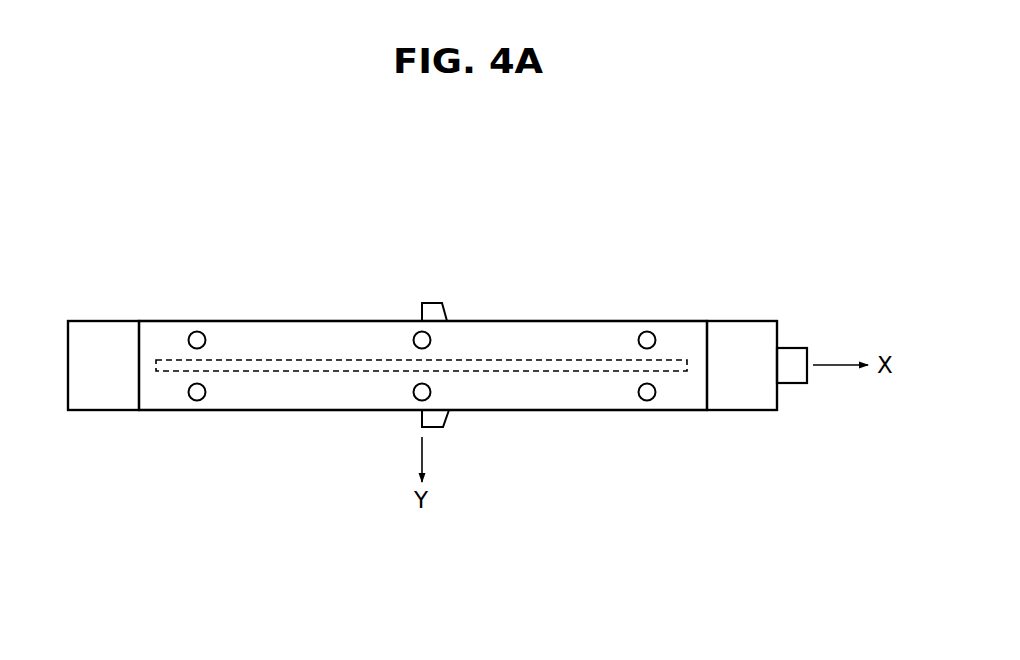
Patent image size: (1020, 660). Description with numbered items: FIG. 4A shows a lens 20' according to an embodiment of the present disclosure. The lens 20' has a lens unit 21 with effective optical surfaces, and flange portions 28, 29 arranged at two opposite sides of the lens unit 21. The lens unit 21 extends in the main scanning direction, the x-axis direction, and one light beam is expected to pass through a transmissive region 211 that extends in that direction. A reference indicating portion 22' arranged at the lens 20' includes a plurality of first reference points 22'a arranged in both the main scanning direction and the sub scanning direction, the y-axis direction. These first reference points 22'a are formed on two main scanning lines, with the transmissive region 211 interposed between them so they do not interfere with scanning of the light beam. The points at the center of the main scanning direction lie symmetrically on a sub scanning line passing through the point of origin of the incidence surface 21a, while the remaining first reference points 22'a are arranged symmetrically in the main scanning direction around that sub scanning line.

The lens 20' is at (430, 318).
The lens unit 21 is at (584, 484).
The incidence surface 21a is at (560, 411).
The transmissive region 211 is at (270, 373).
The reference indicating portion 22' is at (381, 309).
The first reference points 22'a is at (390, 331).
The flange portion 28 is at (123, 411).
The flange portion 29 is at (760, 411).